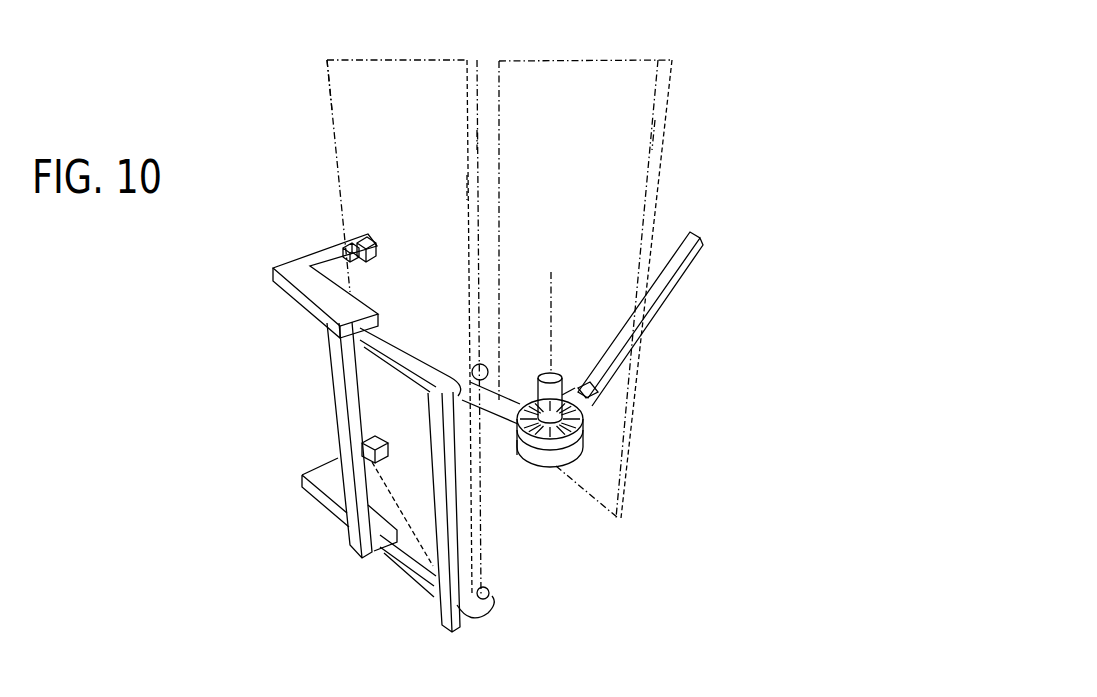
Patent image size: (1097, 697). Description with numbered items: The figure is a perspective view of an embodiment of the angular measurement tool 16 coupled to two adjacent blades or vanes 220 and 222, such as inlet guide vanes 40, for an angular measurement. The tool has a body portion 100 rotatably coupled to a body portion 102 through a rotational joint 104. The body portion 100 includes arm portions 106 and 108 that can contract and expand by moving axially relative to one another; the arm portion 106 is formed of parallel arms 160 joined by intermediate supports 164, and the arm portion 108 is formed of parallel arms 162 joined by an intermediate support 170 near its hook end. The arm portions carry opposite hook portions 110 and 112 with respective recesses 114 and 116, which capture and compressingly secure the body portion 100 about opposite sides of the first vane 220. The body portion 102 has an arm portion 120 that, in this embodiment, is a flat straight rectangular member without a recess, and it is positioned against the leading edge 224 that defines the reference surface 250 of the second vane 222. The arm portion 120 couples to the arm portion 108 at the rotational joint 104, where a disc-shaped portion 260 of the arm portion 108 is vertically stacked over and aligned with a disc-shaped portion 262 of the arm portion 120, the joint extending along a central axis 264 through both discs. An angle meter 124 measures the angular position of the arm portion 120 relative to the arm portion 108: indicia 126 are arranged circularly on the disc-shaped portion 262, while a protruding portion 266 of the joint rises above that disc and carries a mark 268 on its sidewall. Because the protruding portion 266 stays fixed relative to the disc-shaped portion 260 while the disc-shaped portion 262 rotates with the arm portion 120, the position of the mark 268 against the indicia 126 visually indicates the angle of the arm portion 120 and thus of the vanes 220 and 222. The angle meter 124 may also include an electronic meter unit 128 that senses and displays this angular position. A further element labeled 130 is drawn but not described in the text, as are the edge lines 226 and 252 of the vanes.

The angular measurement tool 16 is at (210, 570).
The inlet guide vanes 40 is at (712, 62).
The body portion 100 is at (340, 562).
The body portion 102 is at (712, 293).
The rotational joint 104 is at (562, 360).
The arm portion 106 is at (263, 507).
The arm portion 108 is at (350, 612).
The hook portion 110 is at (320, 222).
The hook portion 112 is at (477, 365).
The recess 114 is at (362, 240).
The recess 116 is at (490, 370).
The arm portion 120 is at (704, 246).
The angle meter 124 is at (540, 485).
The indicia 126 is at (520, 448).
The electronic meter unit 128 is at (594, 380).
The hinge 130 is at (374, 330).
The arms 160 is at (296, 289).
The arms 162 is at (390, 358).
The intermediate supports 164 is at (338, 352).
The intermediate support 170 is at (438, 625).
The blade or vane 220 is at (363, 66).
The blade or vane 222 is at (634, 80).
The leading edge 224 is at (472, 146).
The panel side edge 226 is at (332, 112).
The reference surface 250 is at (660, 136).
The panel inner edge 252 is at (472, 191).
The disc-shaped portion 260 is at (585, 450).
The disc-shaped portion 262 is at (584, 434).
The central axis 264 is at (529, 302).
The protruding portion 266 is at (568, 377).
The mark 268 is at (578, 410).